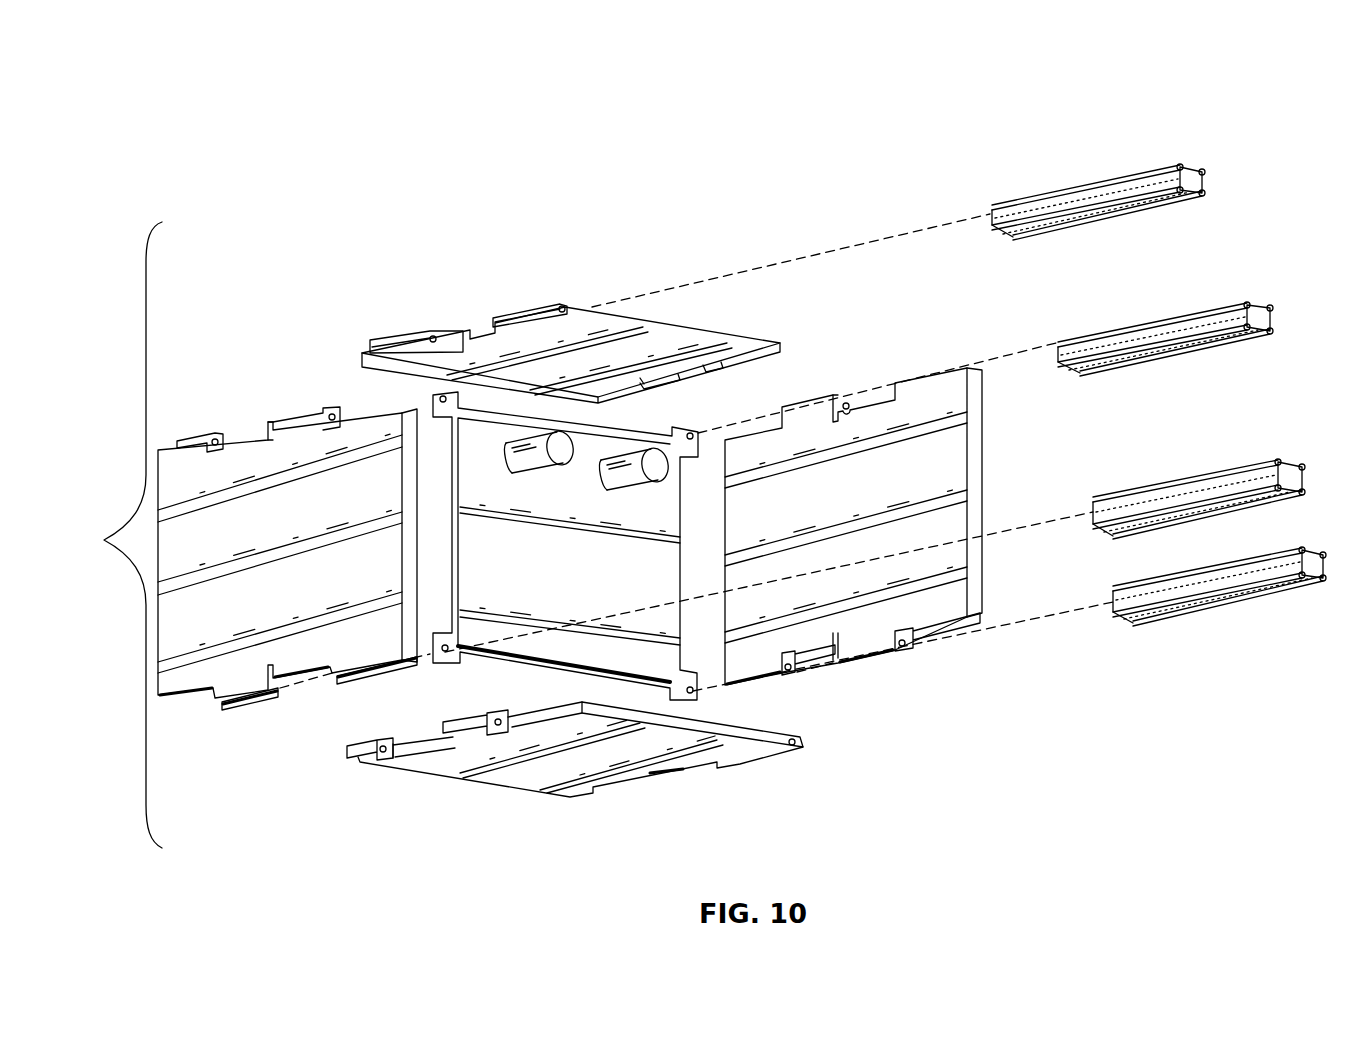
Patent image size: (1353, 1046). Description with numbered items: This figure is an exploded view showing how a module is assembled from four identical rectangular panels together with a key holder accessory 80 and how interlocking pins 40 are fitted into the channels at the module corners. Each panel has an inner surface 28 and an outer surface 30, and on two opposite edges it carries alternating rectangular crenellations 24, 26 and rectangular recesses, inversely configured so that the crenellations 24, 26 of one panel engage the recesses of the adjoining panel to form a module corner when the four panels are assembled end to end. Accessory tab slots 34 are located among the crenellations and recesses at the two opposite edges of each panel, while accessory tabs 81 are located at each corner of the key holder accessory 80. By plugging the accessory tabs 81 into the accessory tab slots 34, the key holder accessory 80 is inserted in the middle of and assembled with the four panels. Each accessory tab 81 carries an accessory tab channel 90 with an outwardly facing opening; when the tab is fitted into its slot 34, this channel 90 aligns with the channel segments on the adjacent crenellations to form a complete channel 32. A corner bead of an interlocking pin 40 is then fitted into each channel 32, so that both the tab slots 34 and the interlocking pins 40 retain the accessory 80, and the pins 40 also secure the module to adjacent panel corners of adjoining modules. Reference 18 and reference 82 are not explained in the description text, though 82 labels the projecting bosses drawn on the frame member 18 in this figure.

The frame 18 is at (408, 523).
The first crenellation 24 is at (396, 346).
The crenellation 26 is at (520, 317).
The inner surface 28 is at (586, 377).
The outer surface 30 is at (313, 530).
The channel 32 is at (847, 403).
The accessory tab slot 34 is at (268, 443).
The interlocking pin 40 is at (1108, 177).
The key holder accessory 80 is at (483, 659).
The accessory tab 81 is at (693, 692).
The cylindrical boss 82 is at (532, 473).
The accessory tab channel 90 is at (690, 433).